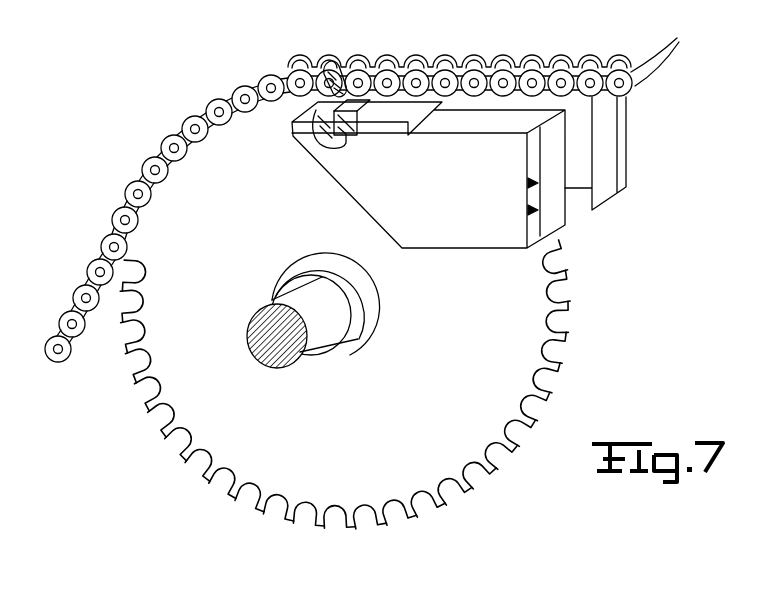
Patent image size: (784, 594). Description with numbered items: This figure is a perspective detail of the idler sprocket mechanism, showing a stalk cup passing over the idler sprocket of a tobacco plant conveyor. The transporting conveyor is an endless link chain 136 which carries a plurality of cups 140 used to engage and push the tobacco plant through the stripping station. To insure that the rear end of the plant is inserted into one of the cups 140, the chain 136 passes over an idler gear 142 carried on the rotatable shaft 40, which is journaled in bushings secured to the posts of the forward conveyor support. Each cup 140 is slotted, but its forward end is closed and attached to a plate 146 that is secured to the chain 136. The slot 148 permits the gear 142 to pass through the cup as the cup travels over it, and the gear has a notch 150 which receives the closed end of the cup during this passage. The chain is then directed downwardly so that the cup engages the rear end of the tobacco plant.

The rotatable shaft 40 is at (260, 318).
The endless link chain 136 is at (549, 35).
The cup 140 is at (628, 155).
The idler gear 142 is at (512, 366).
The plate 146 is at (400, 108).
The slot 148 is at (594, 229).
The notch 150 is at (333, 92).